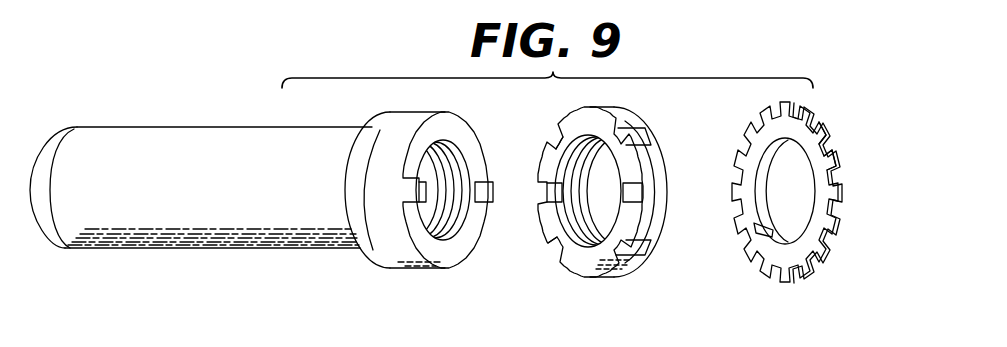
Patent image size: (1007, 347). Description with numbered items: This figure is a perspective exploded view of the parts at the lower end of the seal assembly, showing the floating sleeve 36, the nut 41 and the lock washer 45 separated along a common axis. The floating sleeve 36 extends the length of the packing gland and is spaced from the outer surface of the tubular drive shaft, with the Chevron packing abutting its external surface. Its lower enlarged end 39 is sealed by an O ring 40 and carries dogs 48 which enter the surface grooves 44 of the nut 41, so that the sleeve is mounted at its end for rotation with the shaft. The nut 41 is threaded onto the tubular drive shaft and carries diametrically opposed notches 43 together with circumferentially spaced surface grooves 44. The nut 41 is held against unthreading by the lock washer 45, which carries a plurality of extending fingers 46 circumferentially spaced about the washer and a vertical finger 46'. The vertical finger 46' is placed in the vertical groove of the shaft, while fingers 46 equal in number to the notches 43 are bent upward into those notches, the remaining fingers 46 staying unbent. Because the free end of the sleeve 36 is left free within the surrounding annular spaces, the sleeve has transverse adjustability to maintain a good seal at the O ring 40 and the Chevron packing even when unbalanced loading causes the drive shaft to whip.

The floating sleeve 36 is at (221, 192).
The lower enlarged end 39 is at (408, 268).
The O ring 40 is at (452, 162).
The dogs 48 is at (419, 188).
The nut 41 is at (617, 272).
The notches 43 is at (648, 129).
The surface grooves 44 is at (634, 192).
The lock washer 45 is at (810, 235).
The extending fingers 46 is at (859, 146).
The vertical finger 46' is at (780, 201).